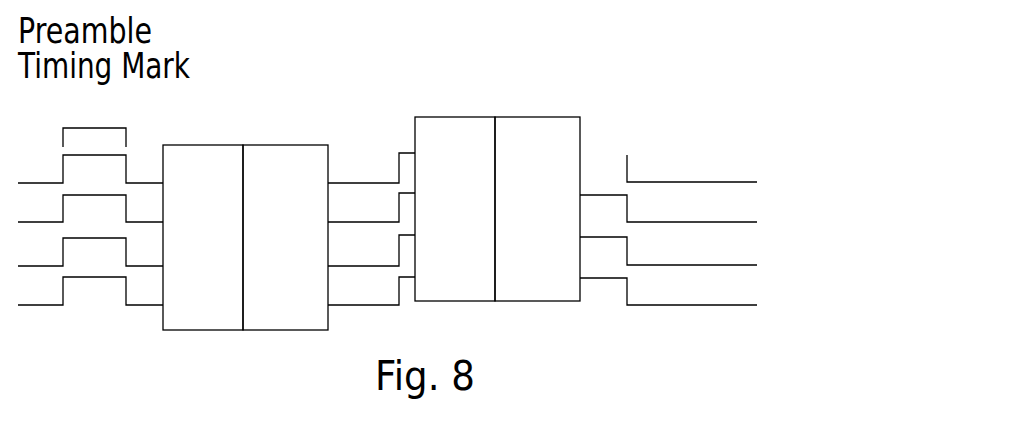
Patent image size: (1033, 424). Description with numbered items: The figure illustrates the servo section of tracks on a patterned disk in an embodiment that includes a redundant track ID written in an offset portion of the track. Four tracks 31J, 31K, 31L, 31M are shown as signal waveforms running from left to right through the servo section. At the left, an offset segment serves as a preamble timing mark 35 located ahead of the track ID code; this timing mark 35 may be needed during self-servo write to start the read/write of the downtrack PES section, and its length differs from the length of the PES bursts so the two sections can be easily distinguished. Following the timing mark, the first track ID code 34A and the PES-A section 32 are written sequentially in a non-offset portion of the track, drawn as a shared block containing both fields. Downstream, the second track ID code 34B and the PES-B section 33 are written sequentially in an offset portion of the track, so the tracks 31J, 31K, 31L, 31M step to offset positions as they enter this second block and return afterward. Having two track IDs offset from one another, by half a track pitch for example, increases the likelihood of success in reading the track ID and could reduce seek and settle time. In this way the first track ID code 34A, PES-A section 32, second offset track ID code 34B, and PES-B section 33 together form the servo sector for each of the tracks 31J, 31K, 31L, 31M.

The preamble timing mark 35 is at (95, 127).
The first track ID code 34A is at (207, 152).
The PES-A section 32 is at (283, 155).
The second offset track ID code 34B is at (458, 125).
The PES-B section 33 is at (535, 125).
The track 31J is at (725, 181).
The track 31K is at (750, 222).
The track 31L is at (748, 265).
The track 31M is at (733, 305).